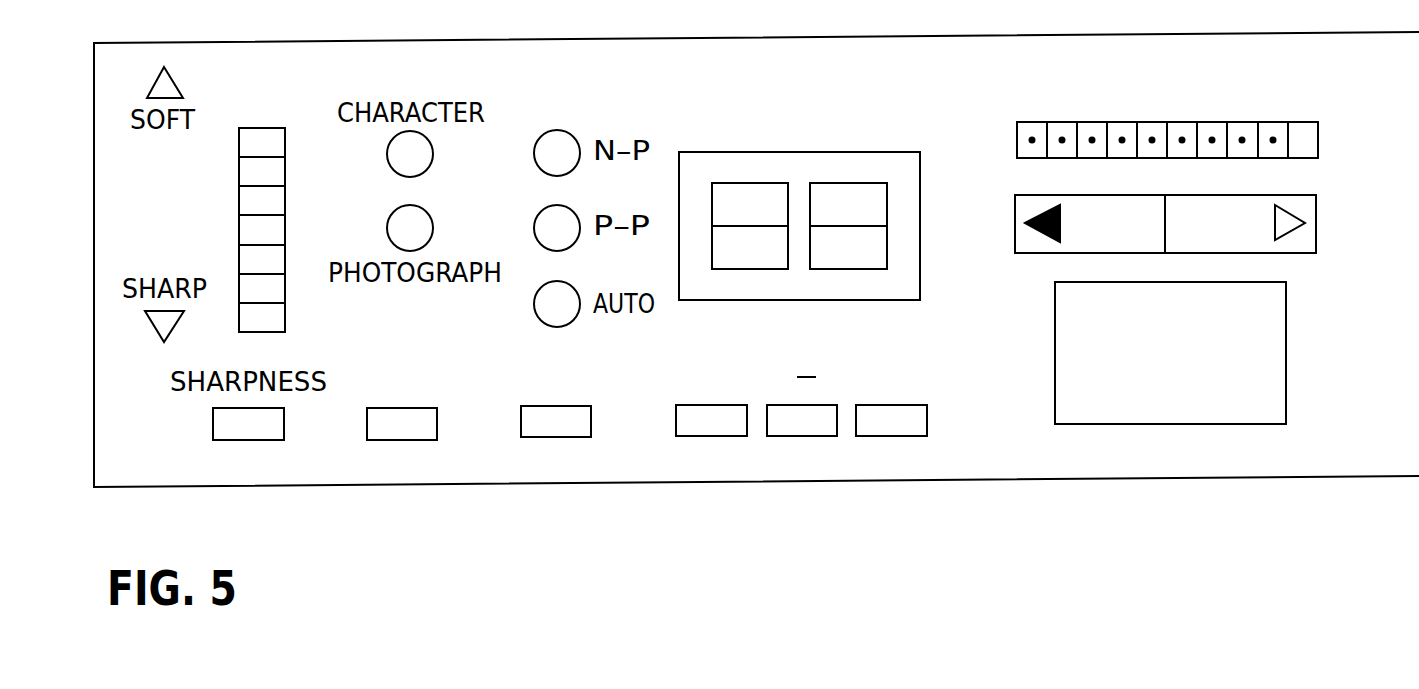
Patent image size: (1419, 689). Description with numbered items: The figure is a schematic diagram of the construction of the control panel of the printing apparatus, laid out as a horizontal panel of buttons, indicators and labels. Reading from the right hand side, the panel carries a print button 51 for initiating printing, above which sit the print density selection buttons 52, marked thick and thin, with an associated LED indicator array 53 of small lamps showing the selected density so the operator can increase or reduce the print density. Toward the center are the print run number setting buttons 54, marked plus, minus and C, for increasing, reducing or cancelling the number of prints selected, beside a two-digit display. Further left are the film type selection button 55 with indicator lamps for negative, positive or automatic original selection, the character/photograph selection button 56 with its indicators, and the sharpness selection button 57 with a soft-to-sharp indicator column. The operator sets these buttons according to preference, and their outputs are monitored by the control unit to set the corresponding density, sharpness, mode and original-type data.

The print button 51 is at (1177, 424).
The print density selection buttons 52 is at (1316, 227).
The LED indicator array 53 is at (1237, 122).
The print run number setting buttons 54 is at (950, 498).
The film type selection button 55 is at (572, 437).
The character/photograph selection button 56 is at (428, 440).
The sharpness selection button 57 is at (276, 440).